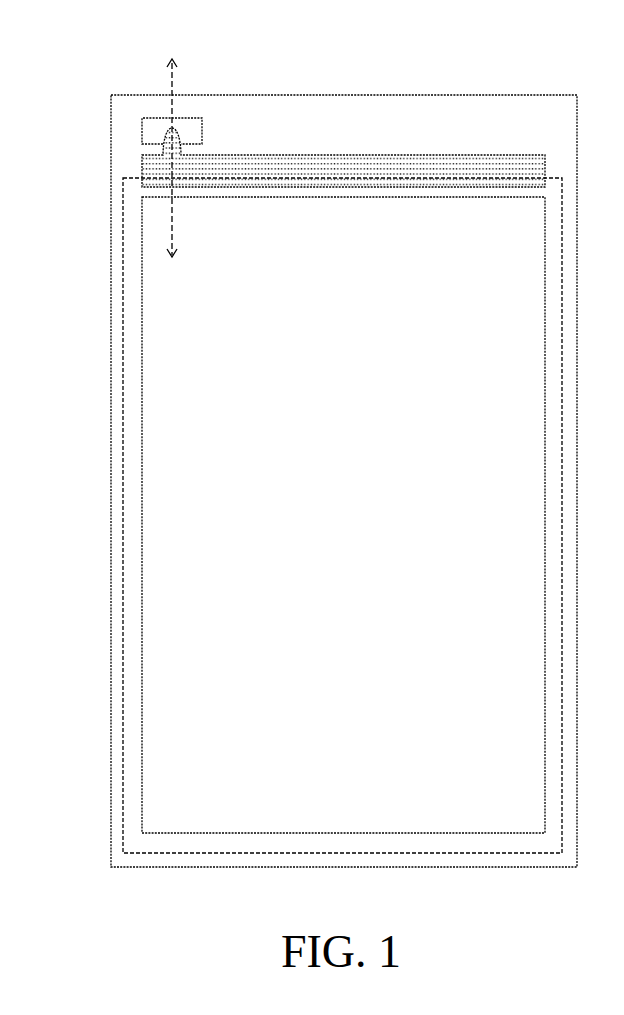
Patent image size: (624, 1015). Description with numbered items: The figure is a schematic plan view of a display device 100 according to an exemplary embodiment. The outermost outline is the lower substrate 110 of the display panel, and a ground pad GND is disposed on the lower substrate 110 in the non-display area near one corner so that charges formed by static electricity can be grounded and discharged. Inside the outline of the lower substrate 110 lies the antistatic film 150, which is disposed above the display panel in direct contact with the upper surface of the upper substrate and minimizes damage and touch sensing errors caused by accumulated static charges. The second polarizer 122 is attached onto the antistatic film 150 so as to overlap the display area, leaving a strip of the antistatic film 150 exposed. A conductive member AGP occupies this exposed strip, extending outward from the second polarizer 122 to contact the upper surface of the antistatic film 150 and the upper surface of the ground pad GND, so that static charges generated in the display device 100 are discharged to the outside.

The display device 100 is at (568, 42).
The lower substrate 110 is at (125, 106).
The ground pad GND is at (148, 133).
The conductive member AGP is at (152, 165).
The antistatic film 150 is at (133, 308).
The second polarizer 122 is at (162, 352).